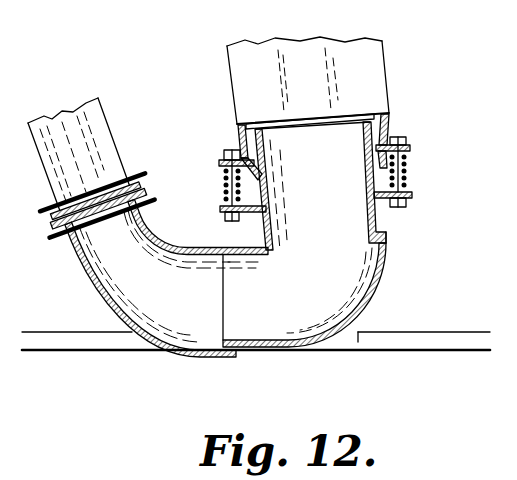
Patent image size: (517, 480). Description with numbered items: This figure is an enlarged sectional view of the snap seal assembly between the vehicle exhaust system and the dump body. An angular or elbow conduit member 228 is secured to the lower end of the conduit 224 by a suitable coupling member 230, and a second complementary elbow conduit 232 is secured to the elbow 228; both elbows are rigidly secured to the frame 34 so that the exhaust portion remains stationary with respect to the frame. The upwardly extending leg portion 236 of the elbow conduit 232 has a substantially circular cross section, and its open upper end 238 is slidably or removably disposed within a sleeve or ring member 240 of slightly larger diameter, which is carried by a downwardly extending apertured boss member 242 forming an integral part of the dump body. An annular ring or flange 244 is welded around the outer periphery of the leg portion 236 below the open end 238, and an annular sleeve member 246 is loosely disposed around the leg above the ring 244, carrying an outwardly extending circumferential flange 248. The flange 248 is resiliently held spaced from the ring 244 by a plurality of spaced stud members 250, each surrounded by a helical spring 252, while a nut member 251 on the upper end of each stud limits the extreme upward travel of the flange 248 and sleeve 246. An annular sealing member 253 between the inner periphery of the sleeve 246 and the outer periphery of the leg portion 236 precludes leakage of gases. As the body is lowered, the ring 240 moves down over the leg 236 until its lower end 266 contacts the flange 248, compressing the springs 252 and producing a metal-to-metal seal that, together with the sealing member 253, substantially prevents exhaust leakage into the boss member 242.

The frame 34 is at (448, 345).
The conduit 224 is at (100, 130).
The elbow conduit member 228 is at (92, 294).
The coupling member 230 is at (138, 185).
The elbow conduit 232 is at (386, 266).
The leg portion 236 is at (380, 222).
The upper end 238 is at (347, 117).
The ring member 240 is at (389, 128).
The apertured boss member 242 is at (372, 55).
The annular ring 244 is at (413, 195).
The annular sleeve member 246 is at (407, 161).
The circumferential flange 248 is at (411, 147).
The stud member 250 is at (224, 200).
The nut member 251 is at (230, 214).
The helical spring 252 is at (224, 176).
The annular sealing member 253 is at (263, 163).
The lower end 266 is at (240, 140).